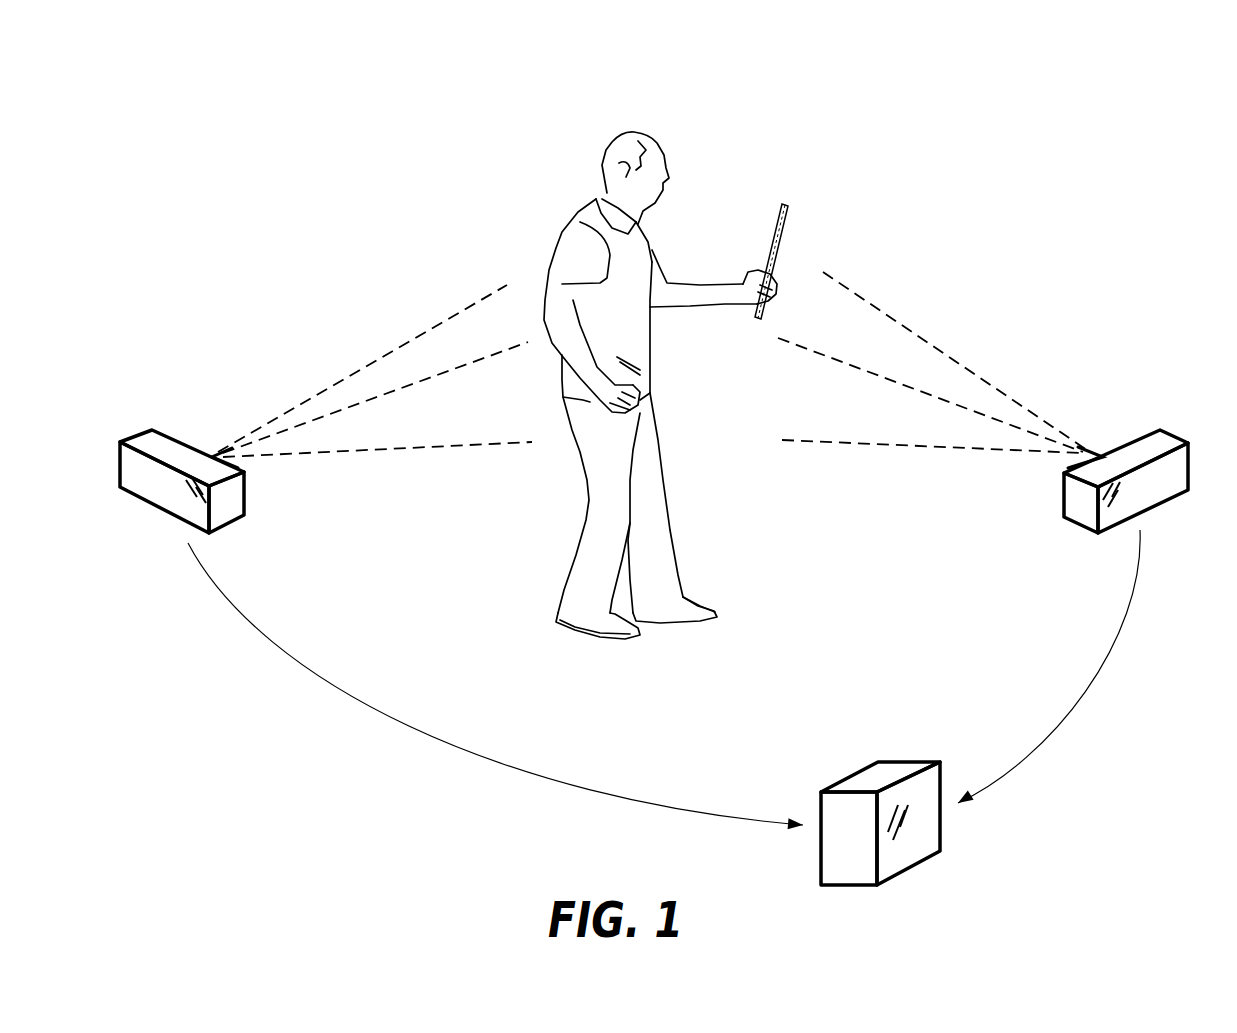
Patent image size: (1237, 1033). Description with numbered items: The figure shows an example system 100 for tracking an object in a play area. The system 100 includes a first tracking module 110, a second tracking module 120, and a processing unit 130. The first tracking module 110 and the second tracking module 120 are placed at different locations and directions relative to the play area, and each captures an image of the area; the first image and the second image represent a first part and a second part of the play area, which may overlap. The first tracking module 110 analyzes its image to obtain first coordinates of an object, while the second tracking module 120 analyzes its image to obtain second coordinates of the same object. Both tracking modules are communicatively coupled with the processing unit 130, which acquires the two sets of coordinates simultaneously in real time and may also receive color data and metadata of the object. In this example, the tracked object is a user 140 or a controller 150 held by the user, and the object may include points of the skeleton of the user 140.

The system 100 is at (1187, 78).
The first tracking module 110 is at (160, 440).
The second tracking module 120 is at (1158, 440).
The processing unit 130 is at (849, 760).
The user 140 is at (685, 155).
The controller 150 is at (802, 233).